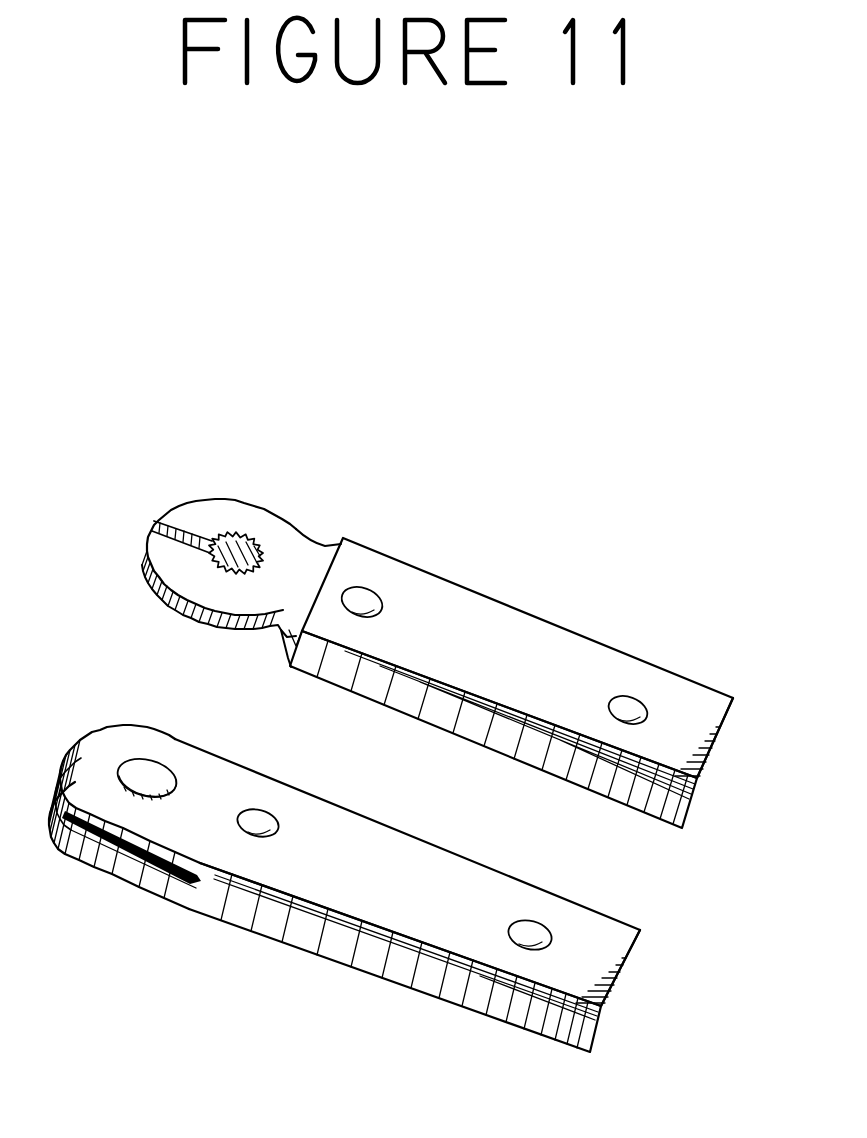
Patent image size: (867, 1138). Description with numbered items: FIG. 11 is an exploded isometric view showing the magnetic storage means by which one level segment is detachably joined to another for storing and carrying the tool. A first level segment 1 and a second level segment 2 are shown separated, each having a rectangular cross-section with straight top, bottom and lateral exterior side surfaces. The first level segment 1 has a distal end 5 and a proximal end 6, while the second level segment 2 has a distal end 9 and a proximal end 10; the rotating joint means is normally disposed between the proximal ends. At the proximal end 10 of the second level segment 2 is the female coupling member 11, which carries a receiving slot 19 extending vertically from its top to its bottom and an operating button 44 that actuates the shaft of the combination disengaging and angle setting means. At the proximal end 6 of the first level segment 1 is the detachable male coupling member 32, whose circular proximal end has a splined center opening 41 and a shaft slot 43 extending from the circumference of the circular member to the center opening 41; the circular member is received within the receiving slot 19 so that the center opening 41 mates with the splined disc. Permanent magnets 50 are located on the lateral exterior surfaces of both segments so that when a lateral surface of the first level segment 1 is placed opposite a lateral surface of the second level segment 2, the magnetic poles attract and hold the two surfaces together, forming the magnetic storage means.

The first level segment 1 is at (350, 865).
The second level segment 2 is at (511, 683).
The distal end 5 is at (640, 950).
The proximal end 6 is at (46, 772).
The distal end 9 is at (725, 726).
The proximal end 10 is at (145, 547).
The female coupling member 11 is at (224, 853).
The receiving slot 19 is at (130, 877).
The male coupling member 32 is at (286, 544).
The center opening 41 is at (236, 543).
The shaft slot 43 is at (146, 524).
The operating button 44 is at (145, 778).
The permanent magnets 50 is at (605, 722).